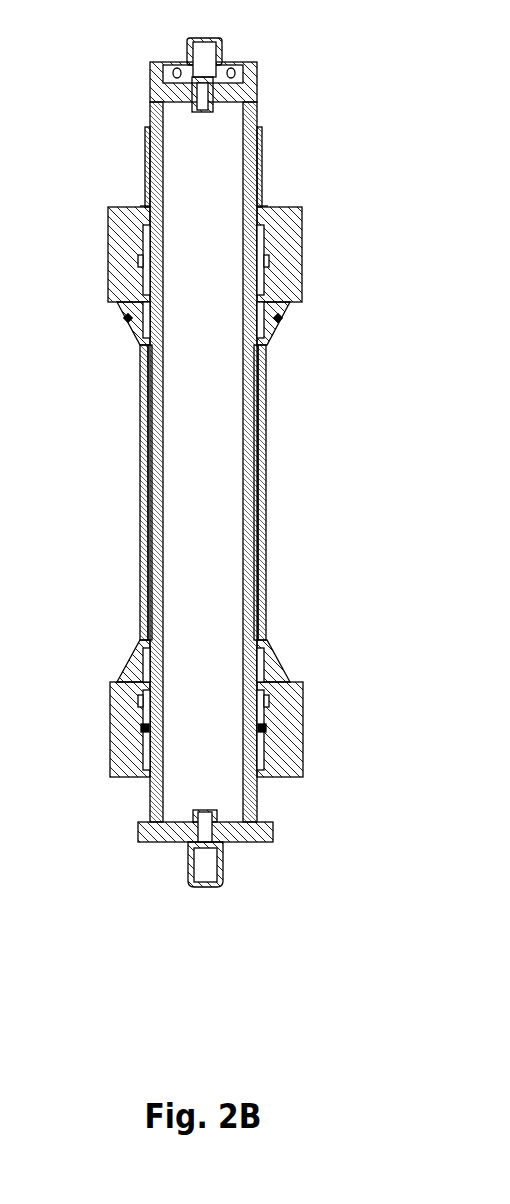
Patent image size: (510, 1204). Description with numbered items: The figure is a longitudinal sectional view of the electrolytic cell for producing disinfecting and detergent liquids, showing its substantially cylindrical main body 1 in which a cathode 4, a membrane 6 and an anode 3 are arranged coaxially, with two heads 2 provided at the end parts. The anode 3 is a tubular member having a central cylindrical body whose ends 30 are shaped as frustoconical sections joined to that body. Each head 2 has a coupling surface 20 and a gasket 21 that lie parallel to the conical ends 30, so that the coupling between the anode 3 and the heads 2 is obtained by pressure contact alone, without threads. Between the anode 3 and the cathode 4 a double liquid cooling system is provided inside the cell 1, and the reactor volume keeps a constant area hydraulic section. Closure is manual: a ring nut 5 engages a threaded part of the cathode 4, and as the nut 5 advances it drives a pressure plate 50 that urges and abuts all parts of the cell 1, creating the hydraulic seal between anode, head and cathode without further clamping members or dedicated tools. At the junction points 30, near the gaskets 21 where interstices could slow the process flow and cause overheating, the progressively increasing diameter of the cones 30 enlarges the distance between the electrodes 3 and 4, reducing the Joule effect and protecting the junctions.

The main body 1 is at (330, 508).
The head 2 is at (105, 258).
The anode 3 is at (142, 593).
The cathode 4 is at (137, 832).
The ring nut 5 is at (147, 170).
The membrane 6 is at (153, 513).
The coupling surface 20 is at (285, 305).
The gasket 21 is at (125, 320).
The conical end 30 is at (130, 330).
The pressure plate 50 is at (263, 203).